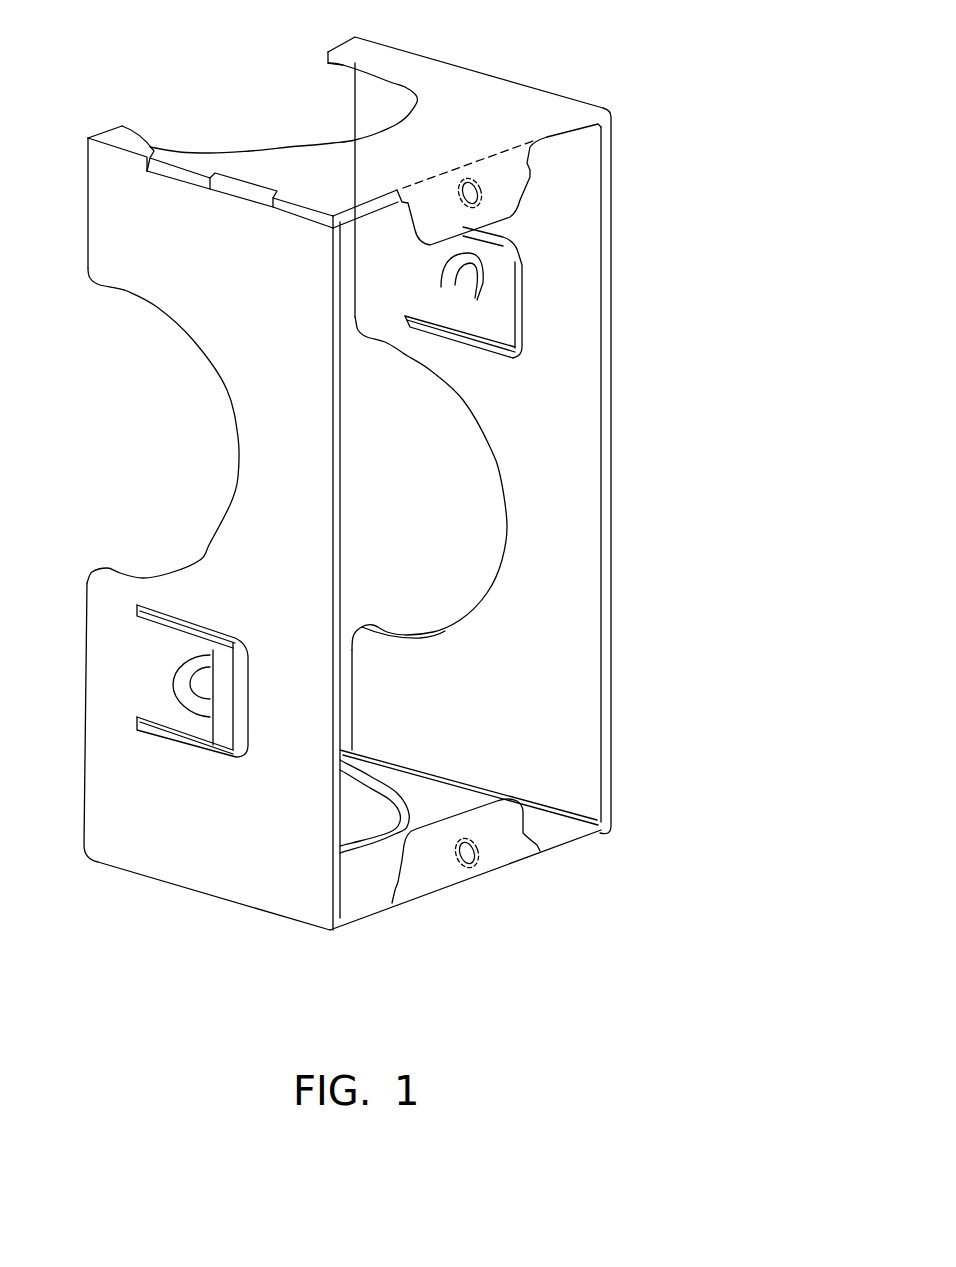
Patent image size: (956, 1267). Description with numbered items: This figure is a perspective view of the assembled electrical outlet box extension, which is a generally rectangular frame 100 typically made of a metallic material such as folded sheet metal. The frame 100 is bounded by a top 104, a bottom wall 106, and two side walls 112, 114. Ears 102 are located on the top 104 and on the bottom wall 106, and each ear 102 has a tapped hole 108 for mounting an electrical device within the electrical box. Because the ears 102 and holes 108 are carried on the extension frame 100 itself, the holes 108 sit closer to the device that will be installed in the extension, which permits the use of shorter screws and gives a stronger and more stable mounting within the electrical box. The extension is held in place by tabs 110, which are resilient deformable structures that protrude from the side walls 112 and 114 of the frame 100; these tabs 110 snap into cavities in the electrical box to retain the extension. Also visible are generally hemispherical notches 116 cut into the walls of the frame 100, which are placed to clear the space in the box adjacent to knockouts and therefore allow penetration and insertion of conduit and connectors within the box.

The frame 100 is at (640, 440).
The ears 102 is at (513, 177).
The top 104 is at (244, 164).
The bottom wall 106 is at (550, 822).
The tapped holes 108 is at (482, 198).
The tabs 110 is at (494, 296).
The side wall 112 is at (198, 826).
The side wall 114 is at (607, 682).
The hemispherical notches 116 is at (353, 65).